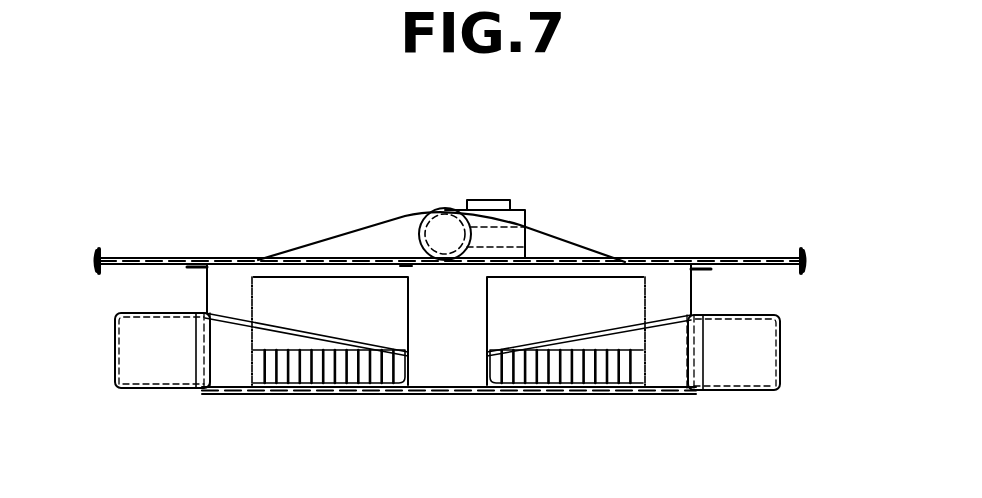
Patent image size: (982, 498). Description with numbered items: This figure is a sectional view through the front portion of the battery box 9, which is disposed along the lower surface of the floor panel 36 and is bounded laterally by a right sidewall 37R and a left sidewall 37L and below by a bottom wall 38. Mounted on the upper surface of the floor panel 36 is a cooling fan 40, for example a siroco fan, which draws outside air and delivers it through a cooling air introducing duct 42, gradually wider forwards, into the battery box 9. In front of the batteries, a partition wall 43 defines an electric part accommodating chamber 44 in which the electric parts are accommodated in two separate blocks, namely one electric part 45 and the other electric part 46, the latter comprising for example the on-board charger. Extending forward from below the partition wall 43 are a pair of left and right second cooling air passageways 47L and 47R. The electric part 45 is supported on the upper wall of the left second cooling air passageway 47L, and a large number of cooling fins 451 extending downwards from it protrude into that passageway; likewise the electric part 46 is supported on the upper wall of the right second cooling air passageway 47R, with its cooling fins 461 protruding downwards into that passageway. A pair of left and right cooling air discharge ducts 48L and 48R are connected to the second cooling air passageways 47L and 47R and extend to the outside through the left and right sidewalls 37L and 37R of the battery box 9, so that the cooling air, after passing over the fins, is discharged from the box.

The battery box 9 is at (458, 398).
The floor panel 36 is at (128, 258).
The right sidewall 37R is at (205, 292).
The left sidewall 37L is at (695, 298).
The bottom wall 38 is at (518, 397).
The cooling fan 40 is at (493, 200).
The cooling air introducing duct 42 is at (580, 238).
The partition wall 43 is at (405, 268).
The electric part accommodating chamber 44 is at (468, 322).
The electric part 45 is at (582, 322).
The electric part 46 is at (349, 322).
The right second cooling air passageway 47R is at (303, 375).
The left second cooling air passageway 47L is at (633, 396).
The right cooling air discharge duct 48R is at (137, 347).
The left cooling air discharge duct 48L is at (758, 358).
The cooling fins 451 is at (583, 355).
The cooling fins 461 is at (357, 355).